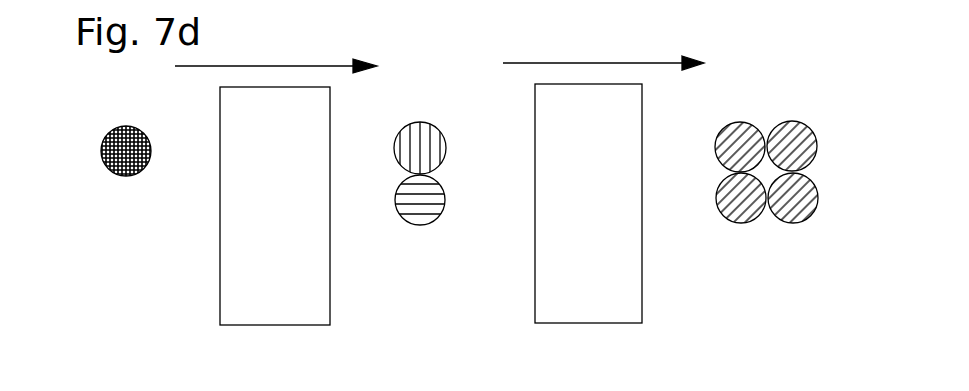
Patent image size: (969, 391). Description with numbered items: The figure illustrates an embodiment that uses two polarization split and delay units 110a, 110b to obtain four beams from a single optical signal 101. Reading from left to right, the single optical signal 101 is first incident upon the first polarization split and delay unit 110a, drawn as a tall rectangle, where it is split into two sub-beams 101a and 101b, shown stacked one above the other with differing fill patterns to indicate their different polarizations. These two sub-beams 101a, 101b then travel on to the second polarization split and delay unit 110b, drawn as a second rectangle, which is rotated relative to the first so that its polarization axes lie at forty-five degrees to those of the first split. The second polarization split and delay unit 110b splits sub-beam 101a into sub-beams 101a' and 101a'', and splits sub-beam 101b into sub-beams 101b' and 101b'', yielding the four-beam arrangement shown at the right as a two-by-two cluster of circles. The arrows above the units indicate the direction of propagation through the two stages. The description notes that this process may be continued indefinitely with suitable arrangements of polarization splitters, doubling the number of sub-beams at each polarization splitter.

The optical signal 101 is at (128, 177).
The sub-beam 101a is at (419, 125).
The sub-beam 101b is at (414, 230).
The sub-beam 101a' is at (734, 120).
The sub-beam 101a'' is at (816, 120).
The sub-beam 101b' is at (737, 226).
The sub-beam 101b'' is at (814, 226).
The first polarization split and delay unit 110a is at (280, 325).
The second polarization split and delay unit 110b is at (590, 323).